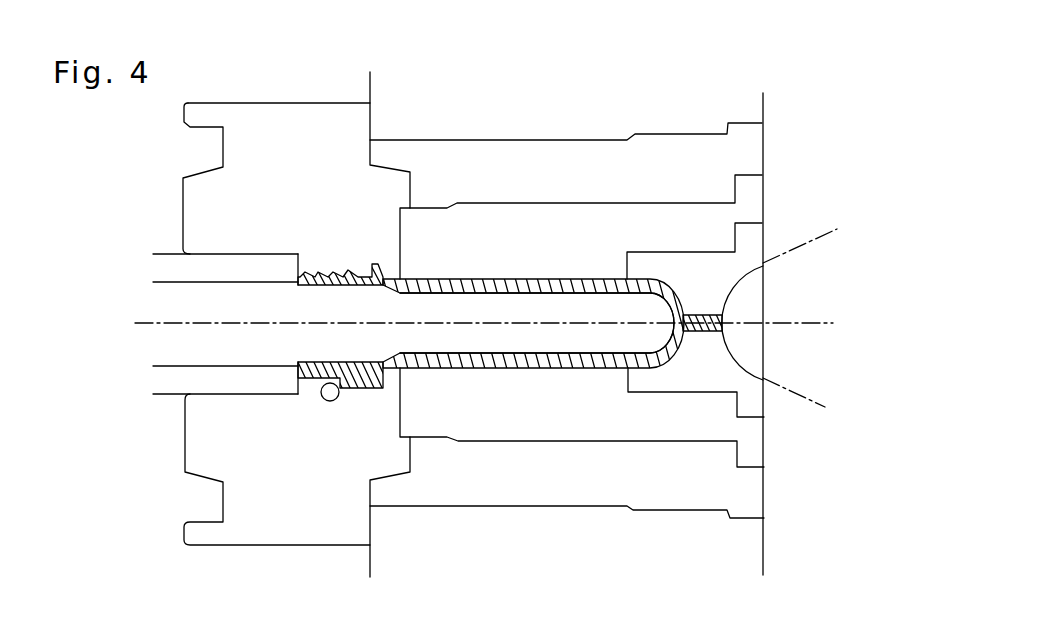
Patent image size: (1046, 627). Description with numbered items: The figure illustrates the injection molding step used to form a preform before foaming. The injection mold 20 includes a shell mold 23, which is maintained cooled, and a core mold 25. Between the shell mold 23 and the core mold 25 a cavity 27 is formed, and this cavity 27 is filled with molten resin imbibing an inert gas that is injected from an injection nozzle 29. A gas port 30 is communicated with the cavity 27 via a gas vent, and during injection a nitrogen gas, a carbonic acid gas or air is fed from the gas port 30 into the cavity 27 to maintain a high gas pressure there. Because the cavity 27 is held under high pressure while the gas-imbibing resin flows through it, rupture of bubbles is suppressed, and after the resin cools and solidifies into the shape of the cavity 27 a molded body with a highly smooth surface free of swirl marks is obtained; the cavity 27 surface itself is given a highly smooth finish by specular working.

The injection mold 20 is at (578, 99).
The shell mold 23 is at (533, 423).
The core mold 25 is at (498, 331).
The cavity 27 is at (607, 357).
The injection nozzle 29 is at (727, 305).
The gas port 30 is at (330, 401).